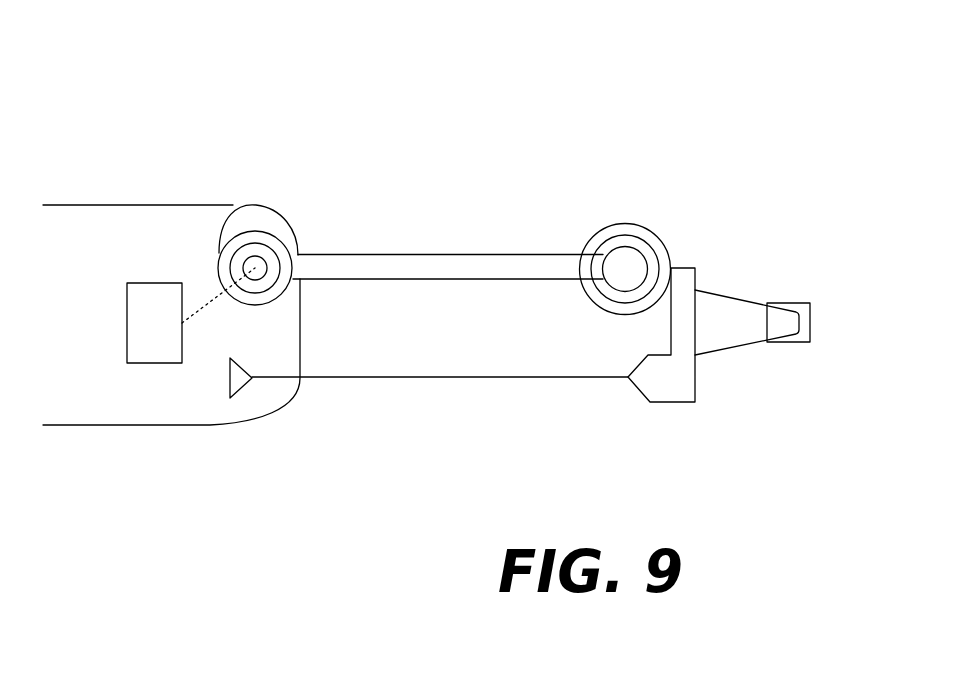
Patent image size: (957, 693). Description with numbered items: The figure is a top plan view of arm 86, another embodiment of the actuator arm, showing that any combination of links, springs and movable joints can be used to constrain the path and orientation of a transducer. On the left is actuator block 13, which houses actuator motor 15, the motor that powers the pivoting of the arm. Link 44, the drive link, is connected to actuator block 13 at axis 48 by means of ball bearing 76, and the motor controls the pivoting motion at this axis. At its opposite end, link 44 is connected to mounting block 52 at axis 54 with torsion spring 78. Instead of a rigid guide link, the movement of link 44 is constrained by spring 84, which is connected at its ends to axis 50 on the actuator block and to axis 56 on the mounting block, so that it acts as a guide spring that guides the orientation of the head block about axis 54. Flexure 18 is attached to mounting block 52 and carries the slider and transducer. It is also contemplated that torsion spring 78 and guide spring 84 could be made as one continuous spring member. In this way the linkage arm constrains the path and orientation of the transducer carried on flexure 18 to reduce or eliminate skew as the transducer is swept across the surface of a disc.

The actuator block 13 is at (160, 220).
The actuator motor 15 is at (148, 328).
The flexure 18 is at (807, 320).
The link 44 is at (440, 265).
The axis 48 is at (250, 272).
The axis 50 is at (252, 379).
The mounting block 52 is at (735, 323).
The axis 54 is at (626, 266).
The axis 56 is at (628, 378).
The ball bearing 76 is at (226, 226).
The torsion spring 78 is at (620, 223).
The spring 84 is at (455, 378).
The arm 86 is at (503, 122).